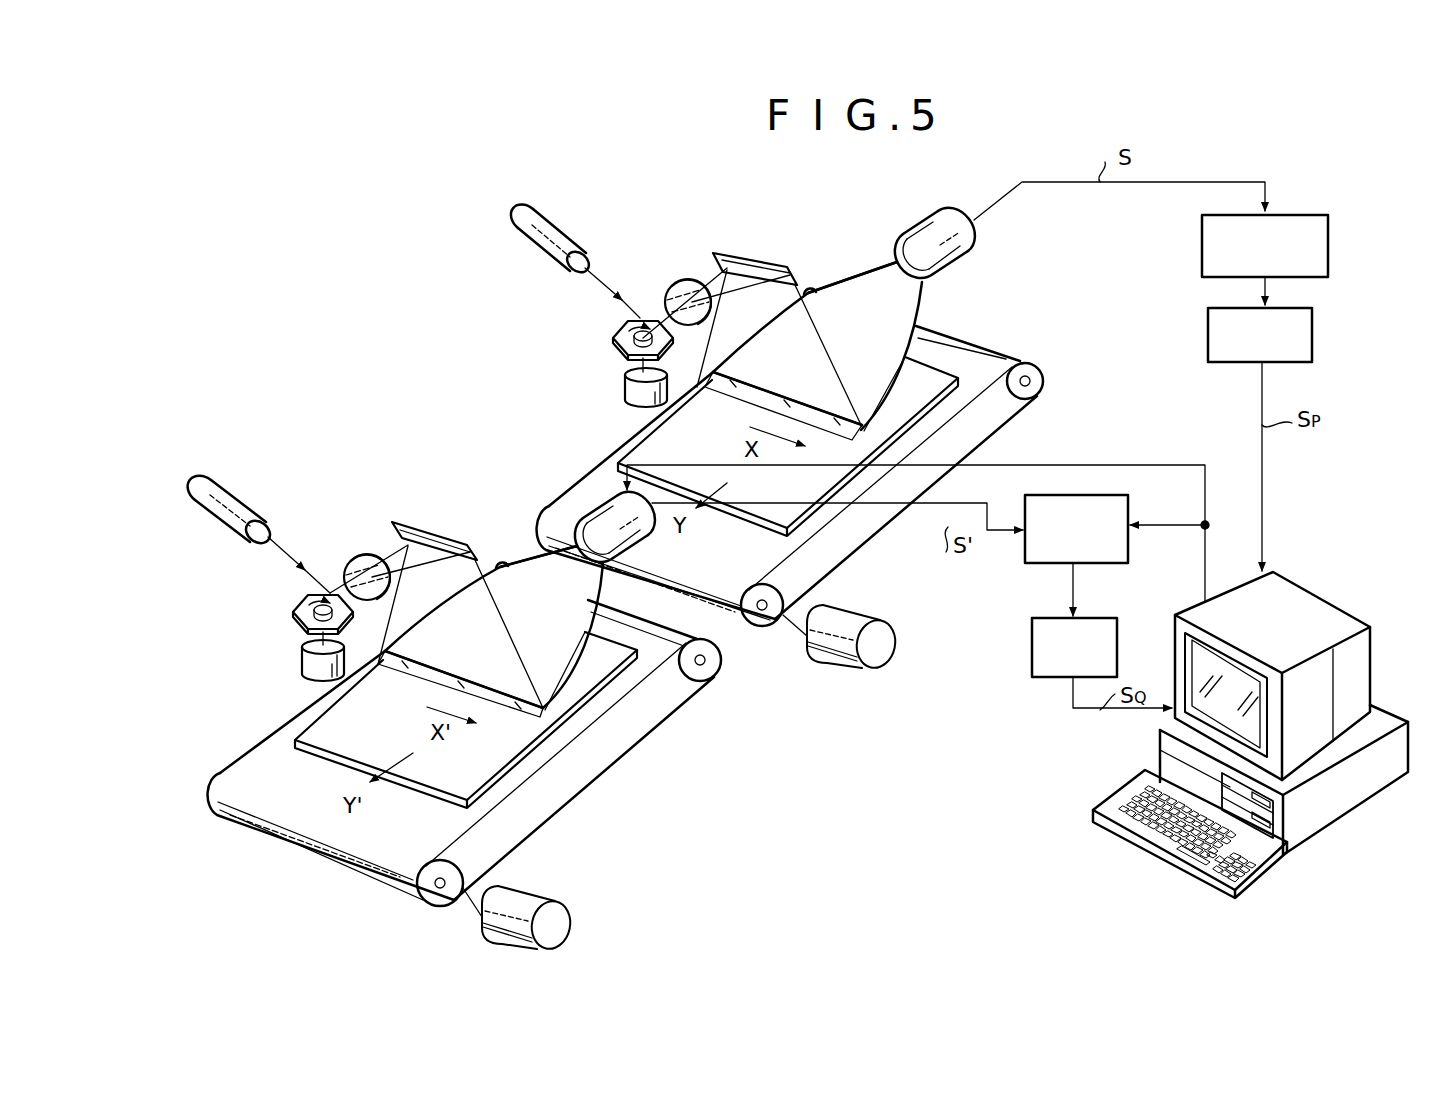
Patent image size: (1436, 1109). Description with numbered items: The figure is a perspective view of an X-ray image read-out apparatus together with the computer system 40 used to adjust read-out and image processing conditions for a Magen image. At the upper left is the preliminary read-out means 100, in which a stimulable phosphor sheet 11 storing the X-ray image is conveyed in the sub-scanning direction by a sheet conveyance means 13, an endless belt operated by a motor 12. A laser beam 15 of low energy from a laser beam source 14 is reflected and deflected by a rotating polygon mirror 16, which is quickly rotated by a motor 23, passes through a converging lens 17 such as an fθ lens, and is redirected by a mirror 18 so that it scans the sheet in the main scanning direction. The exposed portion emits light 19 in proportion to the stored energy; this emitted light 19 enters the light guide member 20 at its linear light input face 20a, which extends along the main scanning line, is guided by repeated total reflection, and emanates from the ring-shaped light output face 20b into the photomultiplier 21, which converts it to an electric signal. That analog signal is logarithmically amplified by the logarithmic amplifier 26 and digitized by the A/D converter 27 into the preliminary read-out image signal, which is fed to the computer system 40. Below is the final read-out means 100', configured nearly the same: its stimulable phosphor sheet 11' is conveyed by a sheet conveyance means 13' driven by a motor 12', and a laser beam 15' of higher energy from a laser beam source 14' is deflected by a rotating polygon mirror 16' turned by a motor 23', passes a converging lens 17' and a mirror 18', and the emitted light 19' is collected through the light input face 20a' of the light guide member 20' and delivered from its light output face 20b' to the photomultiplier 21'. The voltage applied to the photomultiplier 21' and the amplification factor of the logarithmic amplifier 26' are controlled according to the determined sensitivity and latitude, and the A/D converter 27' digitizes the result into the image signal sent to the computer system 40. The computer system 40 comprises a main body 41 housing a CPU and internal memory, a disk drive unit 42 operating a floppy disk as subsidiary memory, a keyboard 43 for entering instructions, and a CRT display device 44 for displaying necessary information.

The preliminary read-out means 100 is at (716, 200).
The final read-out means 100' is at (391, 438).
The stimulable phosphor sheet 11 is at (788, 452).
The stimulable phosphor sheet 11' is at (466, 728).
The motor 12 is at (860, 644).
The motor 12' is at (548, 919).
The sheet conveyance means 13 is at (790, 476).
The sheet conveyance means 13' is at (464, 753).
The laser beam source 14 is at (558, 236).
The laser beam source 14' is at (236, 495).
The laser beam 15 is at (613, 270).
The laser beam 15' is at (299, 541).
The rotating polygon mirror 16 is at (613, 337).
The rotating polygon mirror 16' is at (288, 614).
The converging lens 17 is at (685, 273).
The converging lens 17' is at (367, 540).
The mirror 18 is at (755, 253).
The mirror 18' is at (434, 521).
The emitted light 19 is at (768, 413).
The emitted light 19' is at (447, 694).
The light guide member 20 is at (817, 321).
The light guide member 20' is at (494, 588).
The linear light input face 20a is at (852, 438).
The linear light input face 20a' is at (543, 709).
The ring-shaped light output face 20b is at (915, 286).
The ring-shaped light output face 20b' is at (614, 559).
The photomultiplier 21 is at (935, 225).
The photomultiplier 21' is at (597, 494).
The motor 23 is at (610, 382).
The motor 23' is at (286, 656).
The logarithmic amplifier 26 is at (1290, 246).
The logarithmic amplifier 26' is at (1103, 526).
The A/D converter 27 is at (1288, 332).
The A/D converter 27' is at (1099, 624).
The computer system 40 is at (1251, 725).
The main body 41 is at (1387, 720).
The disk drive unit 42 is at (1275, 822).
The keyboard 43 is at (1265, 848).
The CRT display device 44 is at (1230, 710).